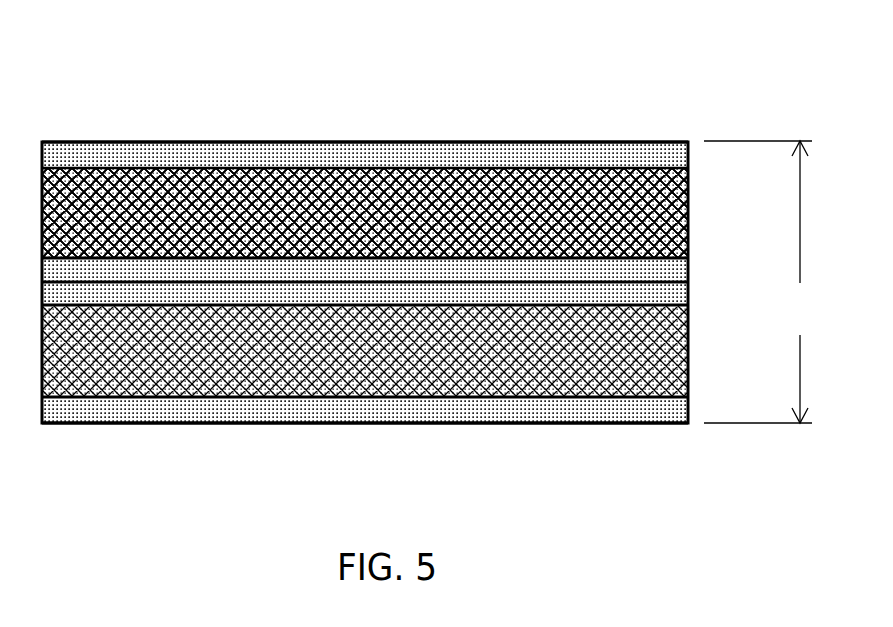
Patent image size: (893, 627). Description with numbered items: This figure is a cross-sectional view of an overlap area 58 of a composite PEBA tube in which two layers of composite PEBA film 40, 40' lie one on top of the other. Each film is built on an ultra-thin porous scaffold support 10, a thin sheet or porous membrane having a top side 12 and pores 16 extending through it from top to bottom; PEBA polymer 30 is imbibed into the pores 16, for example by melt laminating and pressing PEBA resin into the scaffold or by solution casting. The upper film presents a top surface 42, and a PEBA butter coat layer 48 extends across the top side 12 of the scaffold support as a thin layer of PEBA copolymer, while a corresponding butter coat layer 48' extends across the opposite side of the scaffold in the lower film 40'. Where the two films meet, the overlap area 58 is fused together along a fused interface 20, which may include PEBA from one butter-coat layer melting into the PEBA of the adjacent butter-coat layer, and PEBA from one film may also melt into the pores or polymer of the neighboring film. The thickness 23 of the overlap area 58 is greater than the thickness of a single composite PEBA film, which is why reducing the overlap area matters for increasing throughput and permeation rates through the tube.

The overlap area 58 is at (110, 125).
The composite PEBA film 40 is at (354, 164).
The porous scaffold support 10 is at (140, 187).
The PEBA polymer 30 is at (226, 190).
The top surface 42 is at (331, 141).
The PEBA butter coat layer 48 is at (365, 109).
The pores 16 is at (533, 183).
The top side 12 is at (590, 178).
The fused interface 20 is at (665, 281).
The thickness 23 is at (760, 282).
The composite PEBA film 40' is at (365, 402).
The PEBA butter coat layer 48' is at (365, 470).